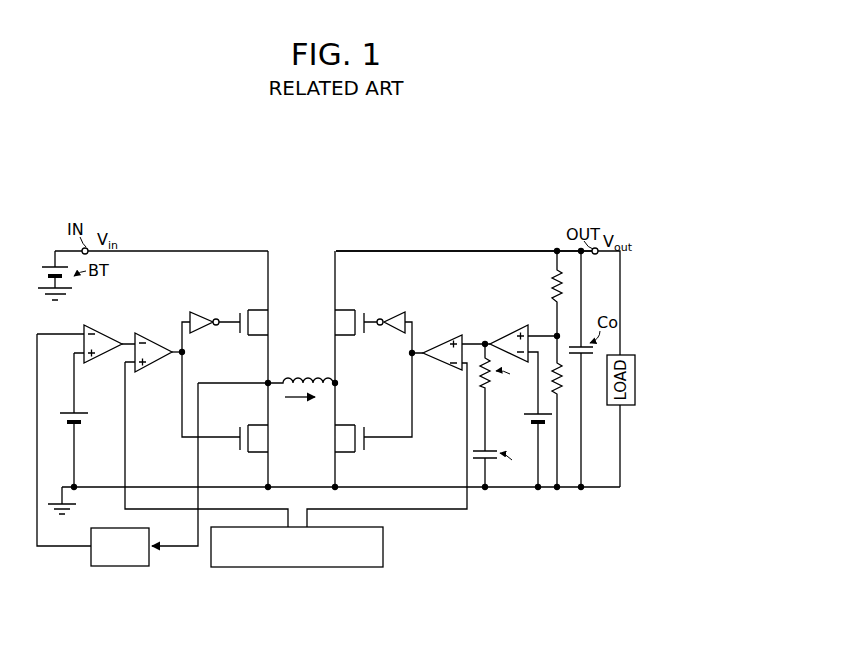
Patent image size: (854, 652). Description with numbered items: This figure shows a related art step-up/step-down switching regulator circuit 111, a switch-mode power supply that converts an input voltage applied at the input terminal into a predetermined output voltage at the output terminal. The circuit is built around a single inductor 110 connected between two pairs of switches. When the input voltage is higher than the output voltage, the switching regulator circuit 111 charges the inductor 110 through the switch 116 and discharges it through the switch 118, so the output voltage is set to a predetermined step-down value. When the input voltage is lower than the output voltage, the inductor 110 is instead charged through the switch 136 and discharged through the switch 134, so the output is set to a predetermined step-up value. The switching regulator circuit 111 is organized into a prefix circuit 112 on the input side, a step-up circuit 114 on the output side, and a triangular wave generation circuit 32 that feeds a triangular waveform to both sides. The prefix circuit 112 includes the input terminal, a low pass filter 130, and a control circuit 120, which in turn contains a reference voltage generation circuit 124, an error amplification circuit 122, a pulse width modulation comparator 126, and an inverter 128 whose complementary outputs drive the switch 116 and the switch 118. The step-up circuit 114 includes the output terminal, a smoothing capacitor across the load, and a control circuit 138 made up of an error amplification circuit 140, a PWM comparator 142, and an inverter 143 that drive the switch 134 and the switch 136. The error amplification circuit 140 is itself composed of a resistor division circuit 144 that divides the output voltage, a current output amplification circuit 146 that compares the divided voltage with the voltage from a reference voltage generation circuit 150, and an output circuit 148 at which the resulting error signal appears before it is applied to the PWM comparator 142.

The triangular wave generation circuit 32 is at (343, 568).
The inductor 110 is at (300, 371).
The switching regulator circuit 111 is at (335, 198).
The prefix circuit 112 is at (179, 226).
The step-up circuit 114 is at (458, 226).
The switch 116 is at (268, 322).
The switch 118 is at (268, 437).
The control circuit 120 is at (145, 307).
The error amplification circuit 122 is at (97, 357).
The reference voltage generation circuit 124 is at (86, 423).
The pulse width modulation (PWM) comparator 126 is at (150, 341).
The inverter 128 is at (204, 332).
The low pass filter (LPF) 130 is at (133, 567).
The switch 134 is at (341, 322).
The switch 136 is at (341, 440).
The control circuit 138 is at (434, 253).
The error amplification circuit 140 is at (460, 310).
The PWM comparator 142 is at (446, 343).
The inverter 143 is at (397, 312).
The resistor division circuit 144 is at (553, 314).
The current output amplification circuit 146 is at (512, 332).
The output circuit 148 is at (490, 430).
The reference voltage generation circuit 150 is at (524, 421).